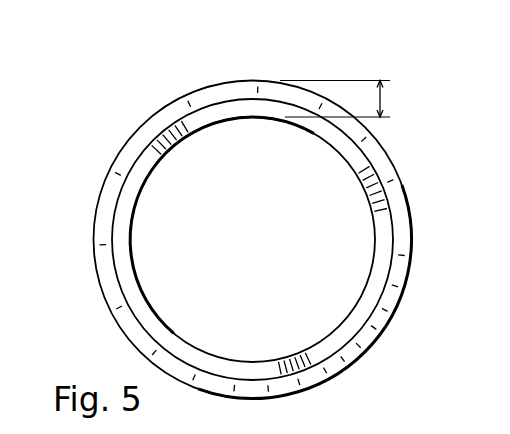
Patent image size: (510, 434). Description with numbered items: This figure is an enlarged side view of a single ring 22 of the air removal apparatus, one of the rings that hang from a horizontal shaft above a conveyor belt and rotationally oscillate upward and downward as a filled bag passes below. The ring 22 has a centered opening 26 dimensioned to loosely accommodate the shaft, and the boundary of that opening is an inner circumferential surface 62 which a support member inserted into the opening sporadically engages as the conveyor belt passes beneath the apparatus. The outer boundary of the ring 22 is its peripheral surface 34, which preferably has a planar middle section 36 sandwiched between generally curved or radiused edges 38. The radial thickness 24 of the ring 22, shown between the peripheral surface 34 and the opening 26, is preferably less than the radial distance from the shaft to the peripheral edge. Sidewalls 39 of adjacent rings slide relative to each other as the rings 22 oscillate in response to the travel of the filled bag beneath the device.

The ring 22 is at (152, 113).
The thickness 24 is at (378, 100).
The centered opening 26 is at (318, 230).
The peripheral surface 34 is at (203, 88).
The planar middle section 36 is at (389, 157).
The radiused edges 38 is at (231, 91).
The sidewalls 39 is at (363, 305).
The inner circumferential surface 62 is at (141, 216).